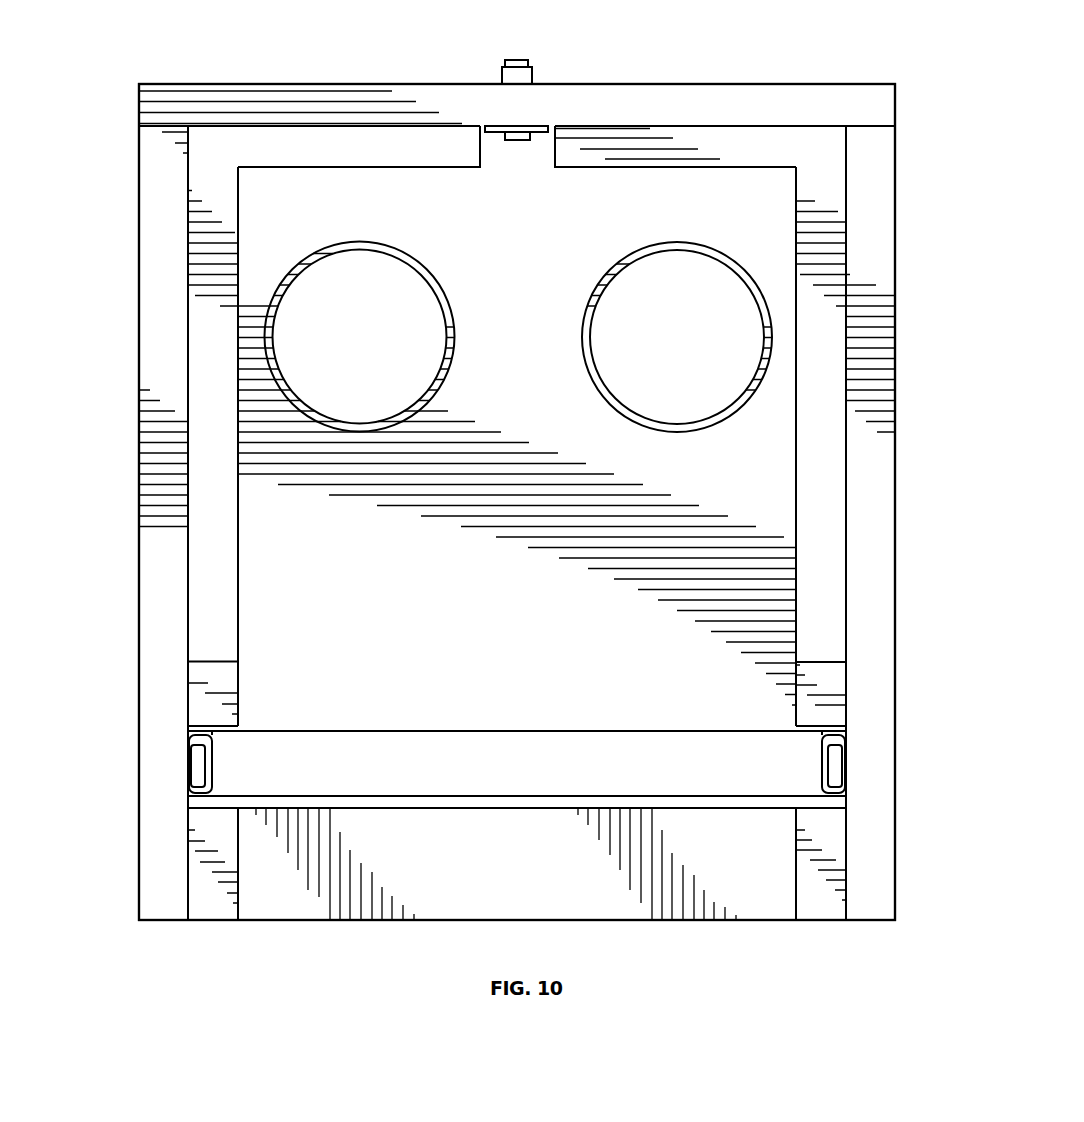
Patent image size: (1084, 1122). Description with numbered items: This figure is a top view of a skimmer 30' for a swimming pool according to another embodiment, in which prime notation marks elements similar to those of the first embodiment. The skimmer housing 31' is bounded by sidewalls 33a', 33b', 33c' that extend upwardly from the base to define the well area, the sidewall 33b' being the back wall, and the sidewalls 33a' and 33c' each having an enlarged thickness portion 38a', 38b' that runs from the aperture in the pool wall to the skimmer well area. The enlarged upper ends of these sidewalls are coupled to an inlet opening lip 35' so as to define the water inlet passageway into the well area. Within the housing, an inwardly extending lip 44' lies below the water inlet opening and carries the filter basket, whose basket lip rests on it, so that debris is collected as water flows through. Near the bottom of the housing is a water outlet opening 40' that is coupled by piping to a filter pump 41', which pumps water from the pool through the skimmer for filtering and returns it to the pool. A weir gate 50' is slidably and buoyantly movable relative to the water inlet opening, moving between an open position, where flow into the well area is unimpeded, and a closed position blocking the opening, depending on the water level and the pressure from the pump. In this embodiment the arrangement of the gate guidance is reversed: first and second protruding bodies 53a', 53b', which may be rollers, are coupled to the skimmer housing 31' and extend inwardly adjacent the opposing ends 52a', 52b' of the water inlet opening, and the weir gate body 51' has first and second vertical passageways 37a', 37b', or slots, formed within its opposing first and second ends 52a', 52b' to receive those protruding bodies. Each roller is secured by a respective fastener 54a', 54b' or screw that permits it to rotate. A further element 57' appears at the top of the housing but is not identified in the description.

The skimmer 30' is at (467, 482).
The skimmer housing 31' is at (467, 502).
The sidewall 33a' is at (130, 502).
The sidewall 33b' is at (517, 86).
The sidewall 33c' is at (902, 502).
The inwardly extending lip 44' is at (517, 373).
The fastener 57' is at (496, 54).
The filter pump 41' is at (442, 474).
The water outlet opening 40' is at (767, 337).
The enlarged thickness portion 38a' is at (152, 791).
The enlarged thickness portion 38b' is at (876, 804).
The weir gate body 51' is at (517, 847).
The first protruding body 53a' is at (146, 737).
The fastener 54a' is at (139, 766).
The first vertical passageway 37a' is at (152, 683).
The second protruding body 53b' is at (892, 767).
The fastener 54b' is at (895, 743).
The second vertical passageway 37b' is at (890, 700).
The first end 52a' is at (148, 859).
The second end 52b' is at (877, 827).
The inlet opening lip 35' is at (517, 898).
The weir gate 50' is at (517, 897).